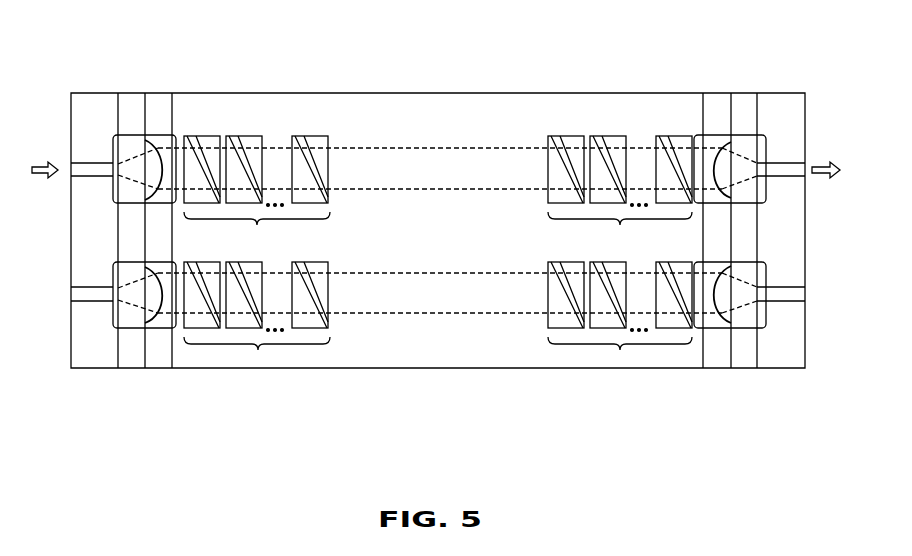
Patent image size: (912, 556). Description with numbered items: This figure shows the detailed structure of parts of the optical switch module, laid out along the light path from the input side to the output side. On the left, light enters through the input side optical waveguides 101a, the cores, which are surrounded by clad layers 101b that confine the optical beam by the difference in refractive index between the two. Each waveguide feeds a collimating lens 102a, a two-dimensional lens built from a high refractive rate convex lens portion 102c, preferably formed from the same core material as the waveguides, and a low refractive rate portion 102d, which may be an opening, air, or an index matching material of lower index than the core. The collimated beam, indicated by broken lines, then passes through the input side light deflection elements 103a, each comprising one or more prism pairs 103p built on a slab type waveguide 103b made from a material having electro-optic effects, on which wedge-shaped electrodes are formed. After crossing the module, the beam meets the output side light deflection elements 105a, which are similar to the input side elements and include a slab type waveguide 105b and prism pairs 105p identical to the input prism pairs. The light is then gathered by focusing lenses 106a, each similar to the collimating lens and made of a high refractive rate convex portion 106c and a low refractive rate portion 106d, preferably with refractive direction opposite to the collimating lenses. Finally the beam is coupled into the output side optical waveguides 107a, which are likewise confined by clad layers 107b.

The optical waveguide 101a is at (82, 177).
The clad layer 101b is at (82, 138).
The collimating lens 102a is at (113, 152).
The high refractive rate portion 102c is at (127, 108).
The low refractive rate portion 102d is at (162, 108).
The light deflection element 103a is at (248, 380).
The slab type waveguide 103b is at (297, 362).
The prism pair 103p is at (307, 136).
The light deflection element 105a is at (610, 380).
The slab type waveguide 105b is at (573, 362).
The prism pair 105p is at (673, 136).
The focusing lens 106a is at (763, 135).
The high refractive rate portion 106c is at (743, 110).
The low refractive rate portion 106d is at (717, 113).
The optical waveguide 107a is at (782, 174).
The clad layer 107b is at (798, 128).